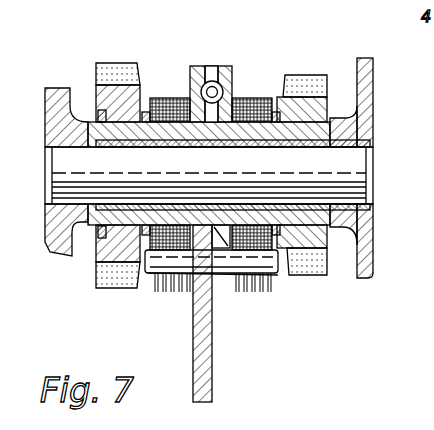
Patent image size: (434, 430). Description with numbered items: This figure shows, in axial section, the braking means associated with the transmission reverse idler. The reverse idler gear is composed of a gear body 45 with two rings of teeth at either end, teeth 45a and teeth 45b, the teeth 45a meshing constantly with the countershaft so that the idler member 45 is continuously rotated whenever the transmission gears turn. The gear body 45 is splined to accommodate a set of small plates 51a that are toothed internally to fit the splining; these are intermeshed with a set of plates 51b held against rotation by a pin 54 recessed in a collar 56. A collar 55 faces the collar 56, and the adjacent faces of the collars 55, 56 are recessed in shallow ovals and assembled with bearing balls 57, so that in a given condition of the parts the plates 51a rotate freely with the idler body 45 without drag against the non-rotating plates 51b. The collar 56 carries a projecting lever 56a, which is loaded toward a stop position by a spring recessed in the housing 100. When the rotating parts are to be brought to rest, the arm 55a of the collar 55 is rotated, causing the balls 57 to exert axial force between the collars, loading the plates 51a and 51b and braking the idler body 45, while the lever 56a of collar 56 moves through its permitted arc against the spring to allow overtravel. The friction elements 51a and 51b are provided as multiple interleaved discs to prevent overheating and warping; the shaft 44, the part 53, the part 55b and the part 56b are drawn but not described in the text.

The shaft 44 is at (67, 163).
The gear body 45 is at (98, 236).
The teeth 45a is at (117, 67).
The teeth 45b is at (297, 79).
The plates 51a is at (267, 99).
The plates 51b is at (253, 283).
The fins 53 is at (157, 288).
The pin 54 is at (268, 267).
The collar 55 is at (219, 72).
The arm 55a is at (222, 244).
The packing 55b is at (229, 93).
The collar 56 is at (193, 80).
The lever 56a is at (215, 388).
The slot 56b is at (208, 68).
The bearing balls 57 is at (223, 87).
The housing 100 is at (367, 78).